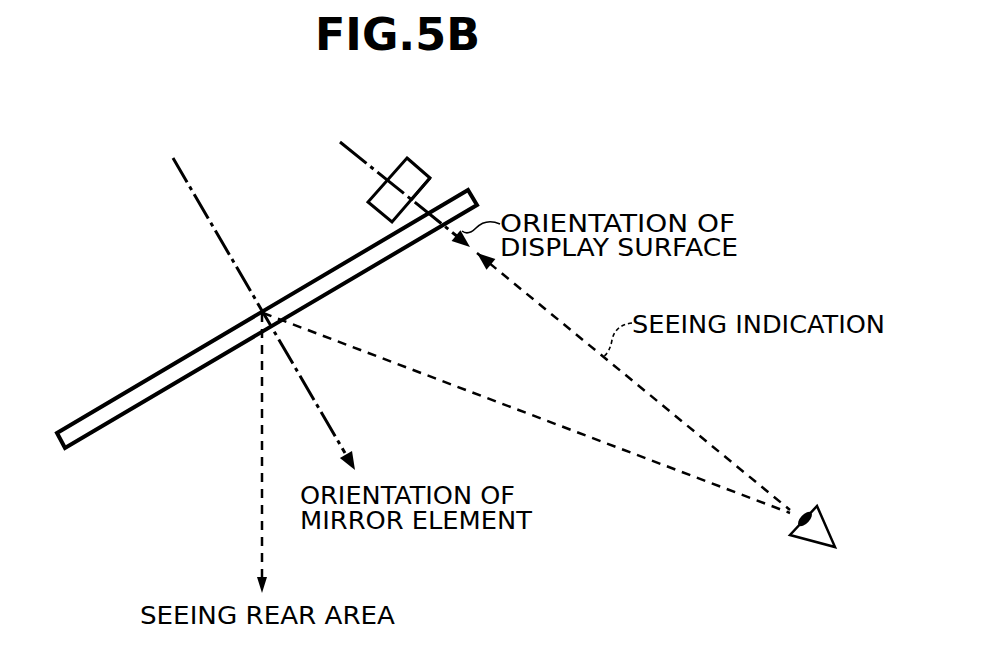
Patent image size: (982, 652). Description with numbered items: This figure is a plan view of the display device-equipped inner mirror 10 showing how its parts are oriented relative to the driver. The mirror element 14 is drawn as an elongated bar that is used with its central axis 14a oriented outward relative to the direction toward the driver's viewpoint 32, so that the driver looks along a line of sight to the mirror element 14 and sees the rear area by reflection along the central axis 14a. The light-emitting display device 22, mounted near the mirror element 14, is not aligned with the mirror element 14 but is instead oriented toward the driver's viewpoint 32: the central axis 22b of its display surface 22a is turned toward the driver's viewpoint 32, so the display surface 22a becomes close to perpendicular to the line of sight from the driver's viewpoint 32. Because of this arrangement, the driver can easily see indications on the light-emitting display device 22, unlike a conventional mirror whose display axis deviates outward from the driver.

The display device-equipped inner mirror 10 is at (527, 96).
The mirror element 14 is at (132, 406).
The central axis of mirror element 14a is at (190, 186).
The light-emitting display device 22 is at (420, 162).
The display surface 22a is at (432, 182).
The central axis of display surface 22b is at (365, 142).
The driver's viewpoint 32 is at (800, 506).